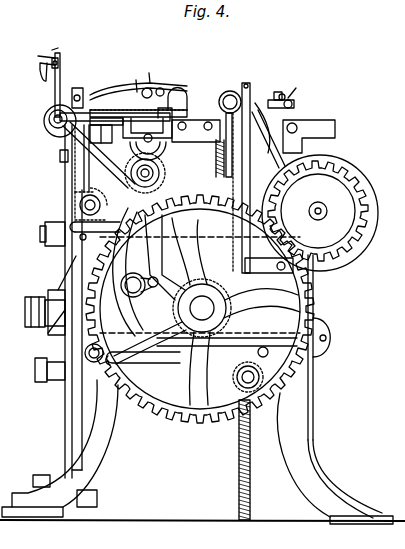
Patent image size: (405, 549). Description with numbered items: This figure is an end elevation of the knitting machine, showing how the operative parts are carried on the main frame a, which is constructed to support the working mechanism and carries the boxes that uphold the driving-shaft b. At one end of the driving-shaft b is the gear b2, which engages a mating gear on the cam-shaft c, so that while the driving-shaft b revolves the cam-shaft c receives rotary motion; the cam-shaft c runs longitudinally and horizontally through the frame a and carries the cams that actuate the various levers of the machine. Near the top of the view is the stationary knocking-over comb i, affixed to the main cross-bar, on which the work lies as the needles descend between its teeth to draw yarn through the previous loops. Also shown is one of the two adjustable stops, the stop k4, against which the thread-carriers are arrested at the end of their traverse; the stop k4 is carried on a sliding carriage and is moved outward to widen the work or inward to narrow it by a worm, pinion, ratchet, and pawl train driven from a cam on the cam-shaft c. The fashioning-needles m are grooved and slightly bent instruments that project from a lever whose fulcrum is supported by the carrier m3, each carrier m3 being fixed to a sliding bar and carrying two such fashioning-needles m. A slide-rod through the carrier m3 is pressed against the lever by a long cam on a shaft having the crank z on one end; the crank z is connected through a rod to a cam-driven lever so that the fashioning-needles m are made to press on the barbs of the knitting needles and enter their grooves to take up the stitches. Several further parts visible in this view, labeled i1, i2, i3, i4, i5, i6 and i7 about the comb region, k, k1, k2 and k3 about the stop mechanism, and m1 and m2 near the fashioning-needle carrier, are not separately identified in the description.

The main frame a is at (197, 324).
The driving-shaft b is at (318, 211).
The gear b2 is at (320, 213).
The cam-shaft c is at (200, 309).
The stationary comb i is at (155, 125).
The lever i1 is at (129, 94).
The rod i2 is at (222, 181).
The cam roller i3 is at (145, 163).
The roller i4 is at (248, 377).
The connecting bar i5 is at (202, 350).
The link i6 is at (269, 265).
The spring rod i7 is at (239, 328).
The bell crank lever k is at (54, 92).
The arm k1 is at (115, 150).
The pivot roller k2 is at (84, 148).
The lever pivot k3 is at (176, 317).
The adjustable stop k4 is at (72, 266).
The fashioning-needles m is at (293, 135).
The pawl m1 is at (273, 100).
The pawl pin m2 is at (292, 90).
The carrier m3 is at (230, 102).
The crank z is at (250, 178).